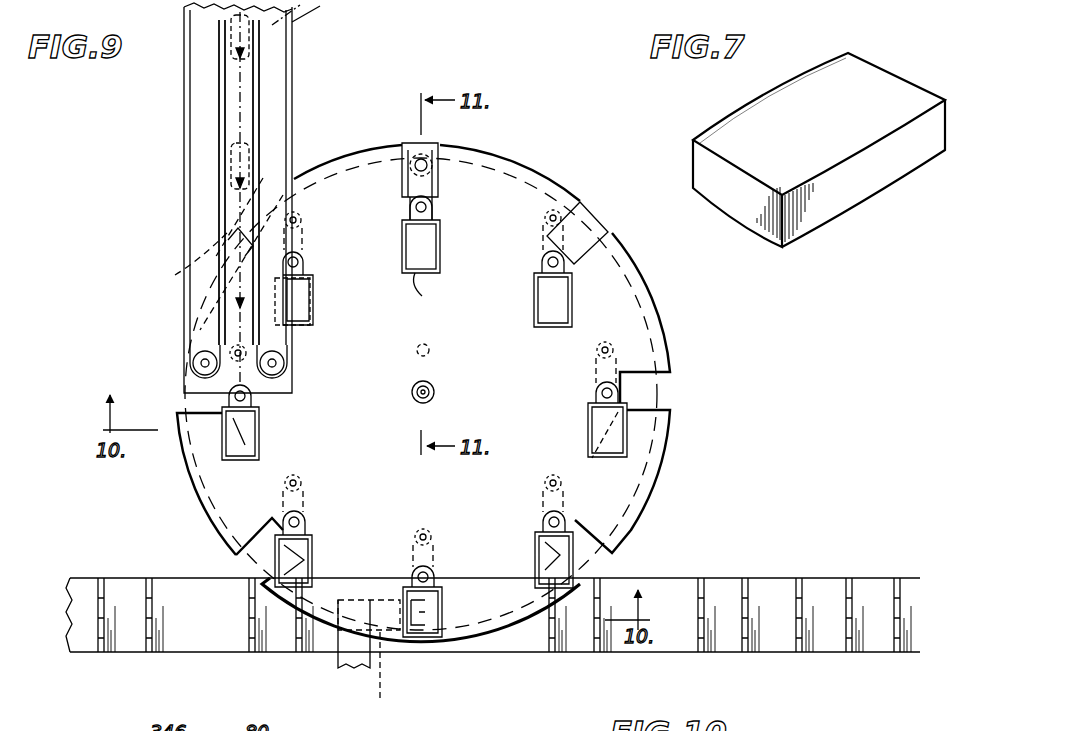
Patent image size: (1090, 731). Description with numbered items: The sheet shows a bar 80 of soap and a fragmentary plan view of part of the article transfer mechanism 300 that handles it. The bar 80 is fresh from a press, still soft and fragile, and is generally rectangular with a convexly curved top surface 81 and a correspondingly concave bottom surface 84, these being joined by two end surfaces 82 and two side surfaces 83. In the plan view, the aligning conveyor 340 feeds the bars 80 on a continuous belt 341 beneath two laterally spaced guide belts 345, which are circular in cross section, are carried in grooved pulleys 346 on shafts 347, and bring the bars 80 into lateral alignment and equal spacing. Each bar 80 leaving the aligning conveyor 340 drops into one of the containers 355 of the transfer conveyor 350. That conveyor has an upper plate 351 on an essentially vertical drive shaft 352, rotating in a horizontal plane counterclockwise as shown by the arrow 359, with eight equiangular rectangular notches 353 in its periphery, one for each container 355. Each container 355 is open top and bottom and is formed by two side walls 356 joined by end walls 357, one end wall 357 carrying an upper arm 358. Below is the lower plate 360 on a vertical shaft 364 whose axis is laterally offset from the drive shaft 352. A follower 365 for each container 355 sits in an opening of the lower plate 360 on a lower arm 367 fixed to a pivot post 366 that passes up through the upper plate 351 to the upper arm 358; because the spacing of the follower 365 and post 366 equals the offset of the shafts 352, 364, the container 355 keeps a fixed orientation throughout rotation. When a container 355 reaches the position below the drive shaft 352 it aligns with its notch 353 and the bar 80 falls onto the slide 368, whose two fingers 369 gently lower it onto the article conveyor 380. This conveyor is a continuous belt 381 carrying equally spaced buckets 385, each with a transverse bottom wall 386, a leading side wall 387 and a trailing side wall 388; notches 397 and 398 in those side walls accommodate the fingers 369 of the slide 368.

In FIG. 9, the bar of soap 80 is at (268, 40).
In FIG. 7, the bar of soap 80 is at (824, 50).
In FIG. 7, the top surface 81 is at (824, 122).
In FIG. 7, the end surfaces 82 is at (752, 212).
In FIG. 7, the side surfaces 83 is at (850, 184).
In FIG. 7, the bottom surface 84 is at (818, 226).
In FIG. 9, the article transfer mechanism 300 is at (523, 29).
In FIG. 9, the aligning conveyor 340 is at (172, 87).
In FIG. 9, the continuous belt 341 is at (298, 22).
In FIG. 9, the guide belts 345 is at (218, 120).
In FIG. 9, the pulleys 346 is at (200, 356).
In FIG. 9, the shafts 347 is at (202, 364).
In FIG. 9, the transfer conveyor 350 is at (676, 443).
In FIG. 9, the upper plate 351 is at (542, 420).
In FIG. 9, the drive shaft 352 is at (434, 389).
In FIG. 9, the rectangular notches 353 is at (186, 413).
In FIG. 9, the containers 355 is at (318, 300).
In FIG. 9, the side walls 356 is at (442, 248).
In FIG. 9, the end walls 357 is at (424, 284).
In FIG. 9, the upper arm 358 is at (436, 207).
In FIG. 9, the arrow 359 is at (378, 487).
In FIG. 9, the lower plate 360 is at (584, 228).
In FIG. 9, the vertical shaft 364 is at (430, 348).
In FIG. 9, the follower 365 is at (430, 160).
In FIG. 9, the pivot post 366 is at (414, 207).
In FIG. 9, the lower arm 367 is at (412, 182).
In FIG. 9, the slide 368 is at (370, 658).
In FIG. 9, the fingers 369 is at (423, 642).
In FIG. 9, the article conveyor 380 is at (732, 552).
In FIG. 9, the continuous belt 381 is at (80, 628).
In FIG. 9, the buckets 385 is at (247, 632).
In FIG. 9, the bottom wall 386 is at (128, 652).
In FIG. 9, the leading side wall 387 is at (146, 655).
In FIG. 9, the trailing side wall 388 is at (97, 650).
In FIG. 9, the notch 397 is at (152, 625).
In FIG. 9, the notch 398 is at (97, 625).